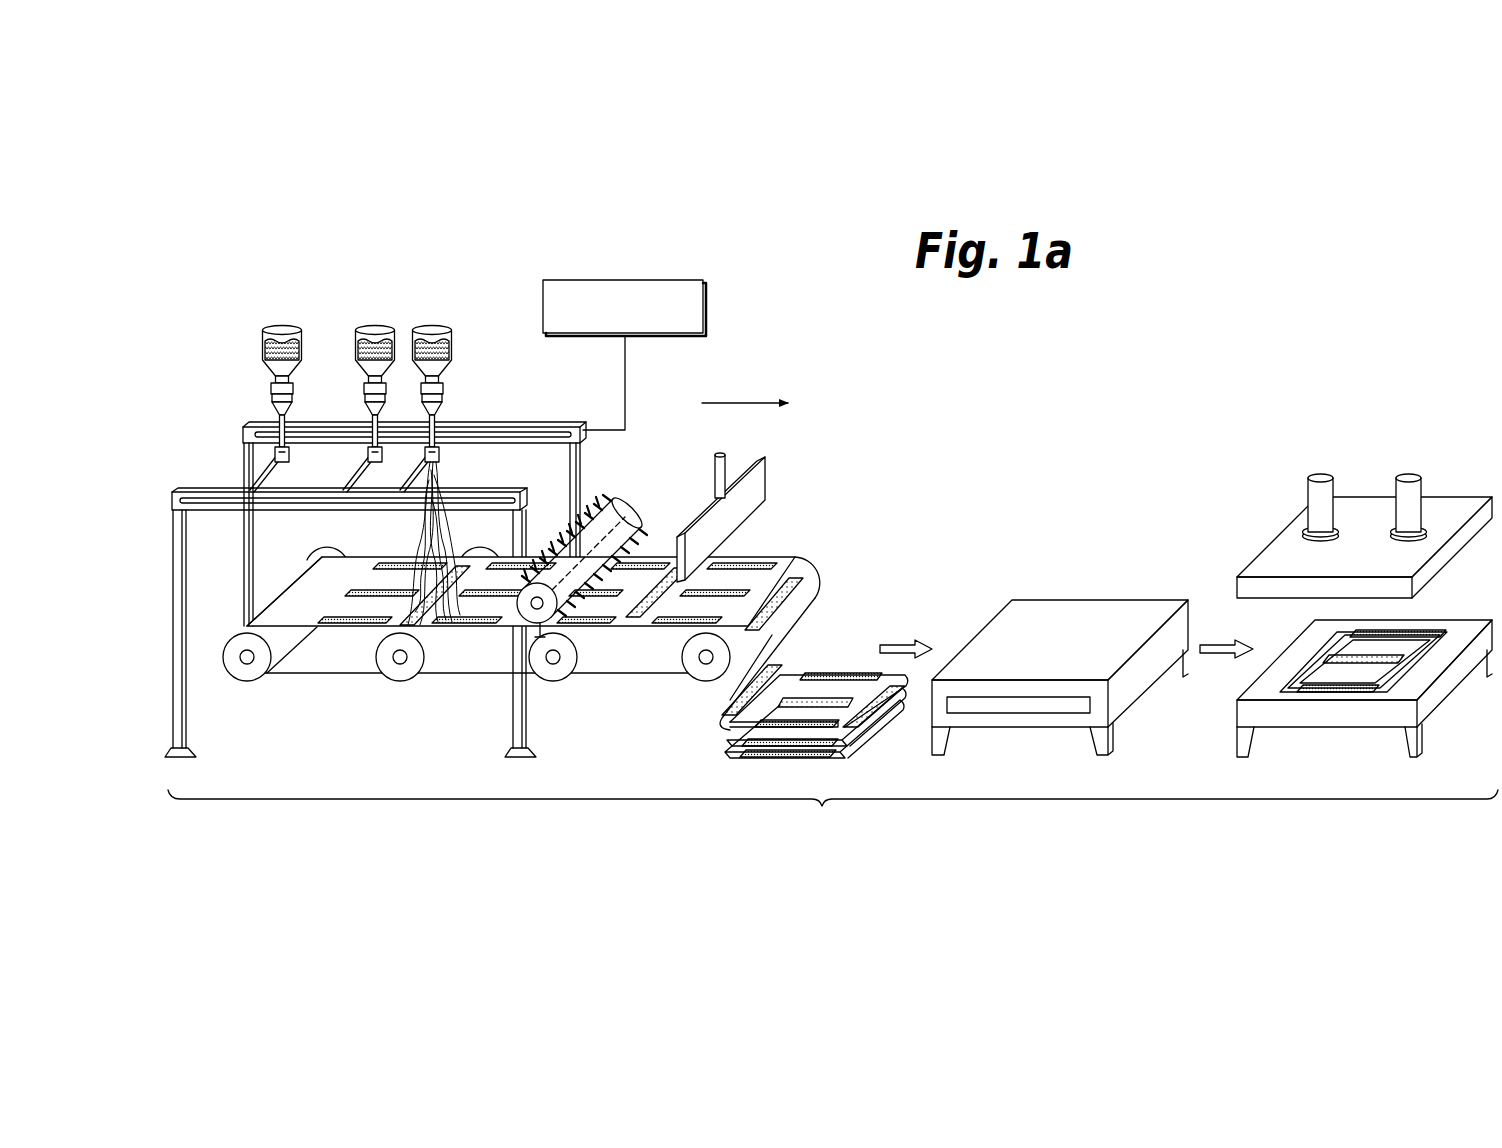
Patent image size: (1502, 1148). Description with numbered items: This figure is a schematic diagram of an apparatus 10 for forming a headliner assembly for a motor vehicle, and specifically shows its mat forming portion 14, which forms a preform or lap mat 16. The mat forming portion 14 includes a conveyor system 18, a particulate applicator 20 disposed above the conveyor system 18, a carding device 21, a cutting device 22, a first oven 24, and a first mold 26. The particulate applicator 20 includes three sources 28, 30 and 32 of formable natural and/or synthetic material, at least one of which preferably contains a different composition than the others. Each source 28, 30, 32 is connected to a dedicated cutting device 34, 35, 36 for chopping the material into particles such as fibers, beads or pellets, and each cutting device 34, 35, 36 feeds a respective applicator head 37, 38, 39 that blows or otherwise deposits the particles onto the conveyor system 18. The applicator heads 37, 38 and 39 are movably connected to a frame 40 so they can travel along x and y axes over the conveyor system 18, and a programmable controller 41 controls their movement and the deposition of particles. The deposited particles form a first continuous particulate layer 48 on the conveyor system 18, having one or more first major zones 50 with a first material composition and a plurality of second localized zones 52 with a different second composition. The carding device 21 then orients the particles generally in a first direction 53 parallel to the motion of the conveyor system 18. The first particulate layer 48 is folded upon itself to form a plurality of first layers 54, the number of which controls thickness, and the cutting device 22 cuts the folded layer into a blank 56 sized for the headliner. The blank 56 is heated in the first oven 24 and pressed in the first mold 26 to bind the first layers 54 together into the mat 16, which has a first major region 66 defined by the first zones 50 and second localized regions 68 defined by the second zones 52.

The apparatus 10 is at (1180, 394).
The mat forming portion 14 is at (833, 822).
The lap mat 16 is at (1293, 673).
The conveyor system 18 is at (606, 690).
The particulate applicator 20 is at (236, 341).
The carding device 21 is at (618, 520).
The cutting device 22 is at (768, 487).
The first oven 24 is at (1073, 600).
The first mold 26 is at (1283, 530).
The material source 28 is at (297, 325).
The material source 30 is at (376, 325).
The material source 32 is at (452, 350).
The cutting device 34 is at (272, 403).
The cutting device 35 is at (366, 395).
The cutting device 36 is at (446, 397).
The applicator head 37 is at (272, 452).
The applicator head 38 is at (366, 455).
The applicator head 39 is at (441, 453).
The frame 40 is at (185, 490).
The programmable controller 41 is at (707, 312).
The first continuous particulate layer 48 is at (757, 563).
The first major zone 50 is at (647, 578).
The second localized zone 52 is at (727, 588).
The first direction 53 is at (738, 403).
The first layer 54 is at (836, 753).
The blank 56 is at (856, 652).
The first major region 66 is at (1397, 643).
The second localized region 68 is at (1432, 632).